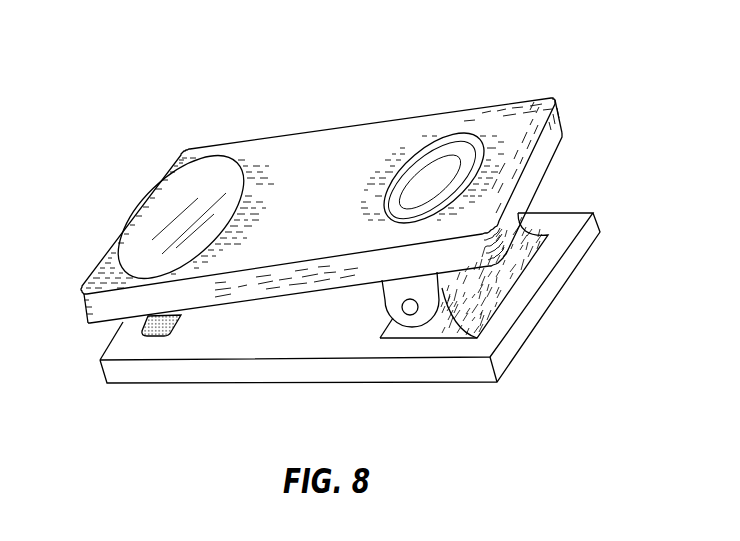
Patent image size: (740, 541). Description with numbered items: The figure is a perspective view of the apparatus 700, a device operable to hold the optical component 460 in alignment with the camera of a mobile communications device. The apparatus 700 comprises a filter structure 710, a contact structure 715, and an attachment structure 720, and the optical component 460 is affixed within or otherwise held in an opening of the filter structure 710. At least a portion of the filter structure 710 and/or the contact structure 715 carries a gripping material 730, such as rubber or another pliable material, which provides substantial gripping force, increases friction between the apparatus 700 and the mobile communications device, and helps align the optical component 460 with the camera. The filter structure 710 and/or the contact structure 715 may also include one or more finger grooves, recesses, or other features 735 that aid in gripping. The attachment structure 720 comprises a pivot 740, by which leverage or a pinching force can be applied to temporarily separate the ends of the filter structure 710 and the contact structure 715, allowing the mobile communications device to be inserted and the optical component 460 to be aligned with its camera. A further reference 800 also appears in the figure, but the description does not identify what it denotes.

The apparatus 700 is at (136, 42).
The filter structure 710 is at (566, 142).
The contact structure 715 is at (586, 212).
The attachment structure 720 is at (477, 290).
The gripping material 730 is at (152, 337).
The finger grooves, recesses, and/or other features 735 is at (443, 163).
The pivot 740 is at (411, 314).
The optical component 460 is at (207, 180).
The hinge 800 is at (395, 263).